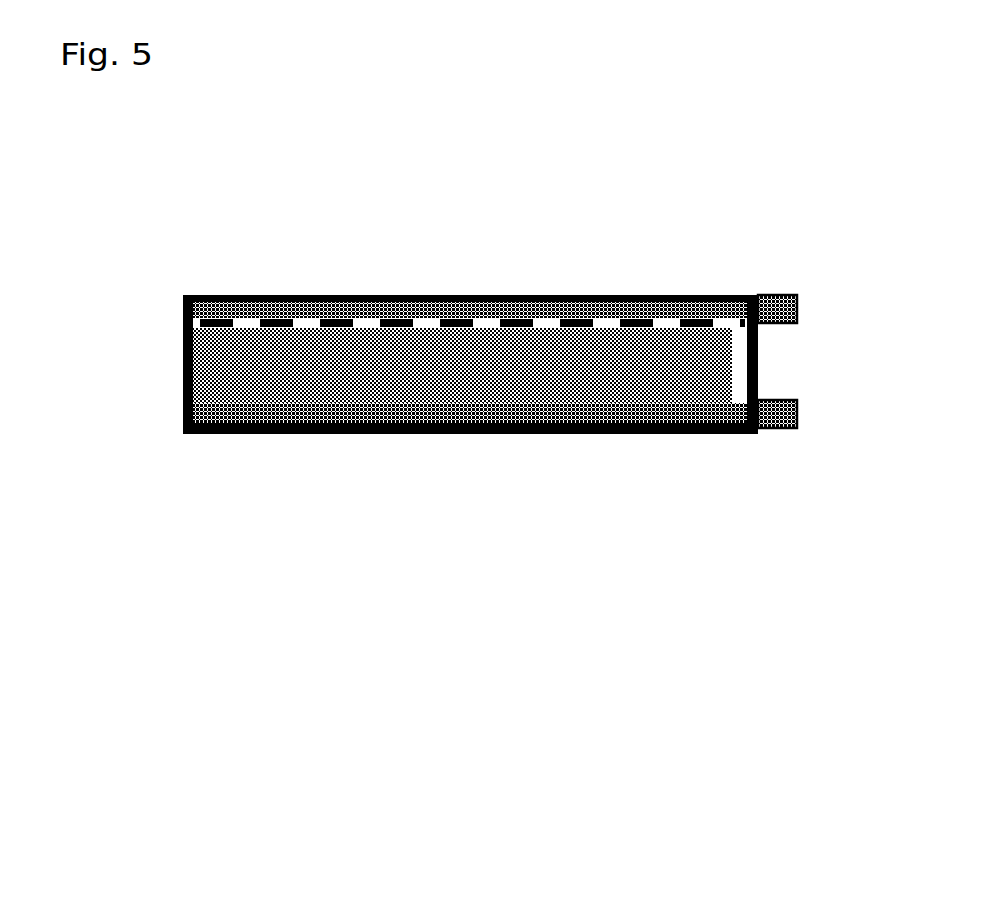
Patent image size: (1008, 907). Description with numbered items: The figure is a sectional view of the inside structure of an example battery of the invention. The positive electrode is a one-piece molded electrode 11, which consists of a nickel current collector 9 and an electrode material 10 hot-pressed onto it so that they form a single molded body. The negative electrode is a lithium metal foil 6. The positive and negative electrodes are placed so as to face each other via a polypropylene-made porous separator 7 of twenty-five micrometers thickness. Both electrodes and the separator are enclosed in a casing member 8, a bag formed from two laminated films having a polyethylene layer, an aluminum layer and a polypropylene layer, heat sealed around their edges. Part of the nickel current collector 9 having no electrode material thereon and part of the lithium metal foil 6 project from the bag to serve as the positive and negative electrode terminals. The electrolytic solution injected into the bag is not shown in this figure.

The lithium metal foil 6 is at (797, 303).
The porous separator 7 is at (182, 311).
The casing member 8 is at (477, 295).
The nickel current collector 9 is at (549, 430).
The electrode material 10 is at (338, 362).
The one-piece molded electrode 11 is at (540, 697).